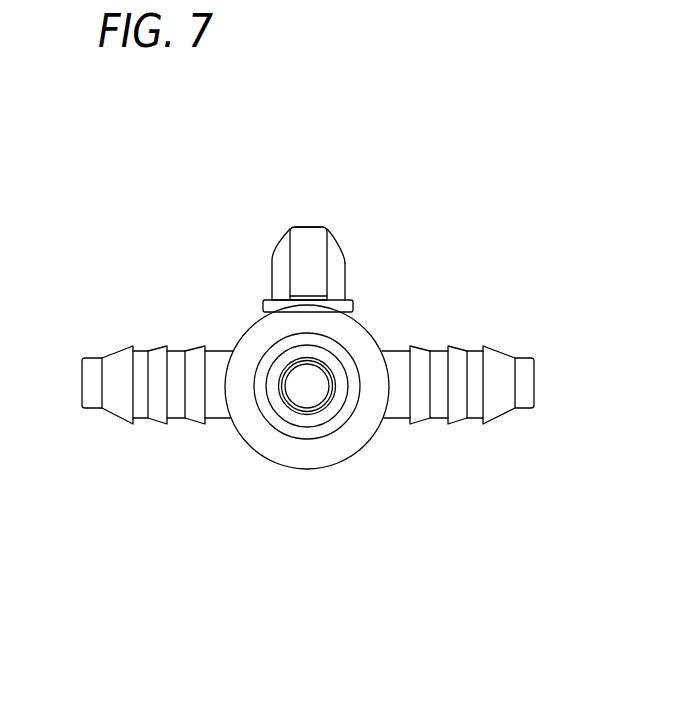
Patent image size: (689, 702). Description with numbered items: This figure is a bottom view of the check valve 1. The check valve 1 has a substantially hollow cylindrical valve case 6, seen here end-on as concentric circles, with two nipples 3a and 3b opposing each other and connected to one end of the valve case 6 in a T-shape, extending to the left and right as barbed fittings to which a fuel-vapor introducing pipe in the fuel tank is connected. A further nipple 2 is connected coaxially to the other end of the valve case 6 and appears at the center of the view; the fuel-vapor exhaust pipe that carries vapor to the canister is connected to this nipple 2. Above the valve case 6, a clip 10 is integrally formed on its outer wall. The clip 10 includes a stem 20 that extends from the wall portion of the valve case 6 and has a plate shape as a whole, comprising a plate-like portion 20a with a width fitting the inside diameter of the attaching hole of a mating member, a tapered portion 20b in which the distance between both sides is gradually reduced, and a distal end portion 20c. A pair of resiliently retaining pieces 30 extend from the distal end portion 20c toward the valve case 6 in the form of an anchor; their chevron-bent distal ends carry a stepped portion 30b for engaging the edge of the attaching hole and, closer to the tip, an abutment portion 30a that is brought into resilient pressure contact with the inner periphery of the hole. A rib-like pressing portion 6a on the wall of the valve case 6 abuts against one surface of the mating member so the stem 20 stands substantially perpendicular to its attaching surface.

The check valve 1 is at (311, 315).
The nipple 2 is at (332, 425).
The nipple 3a is at (157, 412).
The nipple 3b is at (438, 415).
The valve case 6 is at (272, 462).
The pressing portion 6a is at (355, 303).
The clip 10 is at (340, 225).
The stem 20 is at (417, 219).
The plate-like portion 20a is at (419, 267).
The tapered portion 20b is at (338, 243).
The distal end portion 20c is at (313, 223).
The resiliently retaining piece 30 is at (298, 255).
The abutment portion 30a is at (297, 291).
The stepped portion 30b is at (308, 294).